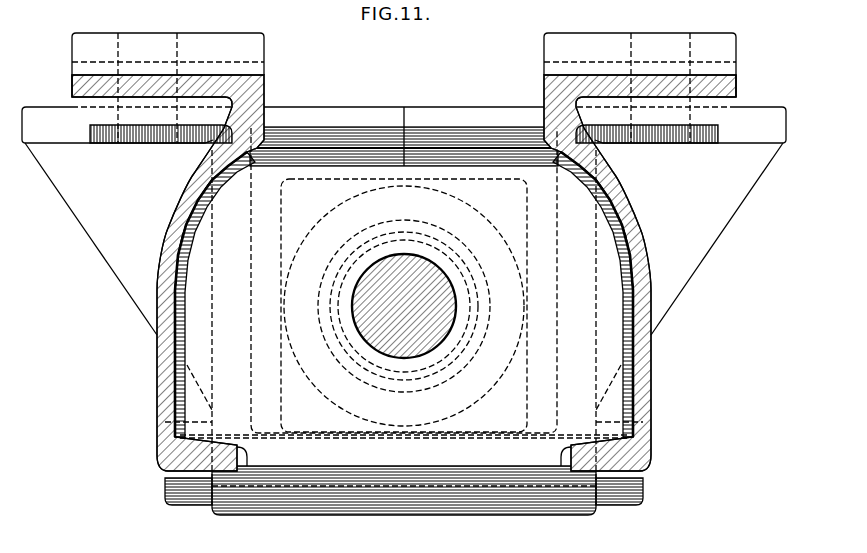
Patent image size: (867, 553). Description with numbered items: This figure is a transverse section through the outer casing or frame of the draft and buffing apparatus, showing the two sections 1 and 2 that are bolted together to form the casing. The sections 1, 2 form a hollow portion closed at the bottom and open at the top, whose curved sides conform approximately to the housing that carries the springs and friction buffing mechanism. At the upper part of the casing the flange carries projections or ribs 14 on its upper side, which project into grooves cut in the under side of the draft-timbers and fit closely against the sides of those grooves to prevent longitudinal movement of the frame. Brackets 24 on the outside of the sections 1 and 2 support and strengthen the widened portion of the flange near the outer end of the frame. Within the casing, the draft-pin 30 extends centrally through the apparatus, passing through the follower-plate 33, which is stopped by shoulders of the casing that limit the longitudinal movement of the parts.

The section of outer casing or frame 1 is at (165, 373).
The section of outer casing or frame 2 is at (653, 392).
The projections or ribs 14 is at (404, 88).
The brackets 24 is at (404, 221).
The draft-pin 30 is at (404, 306).
The follower-plate 33 is at (404, 450).